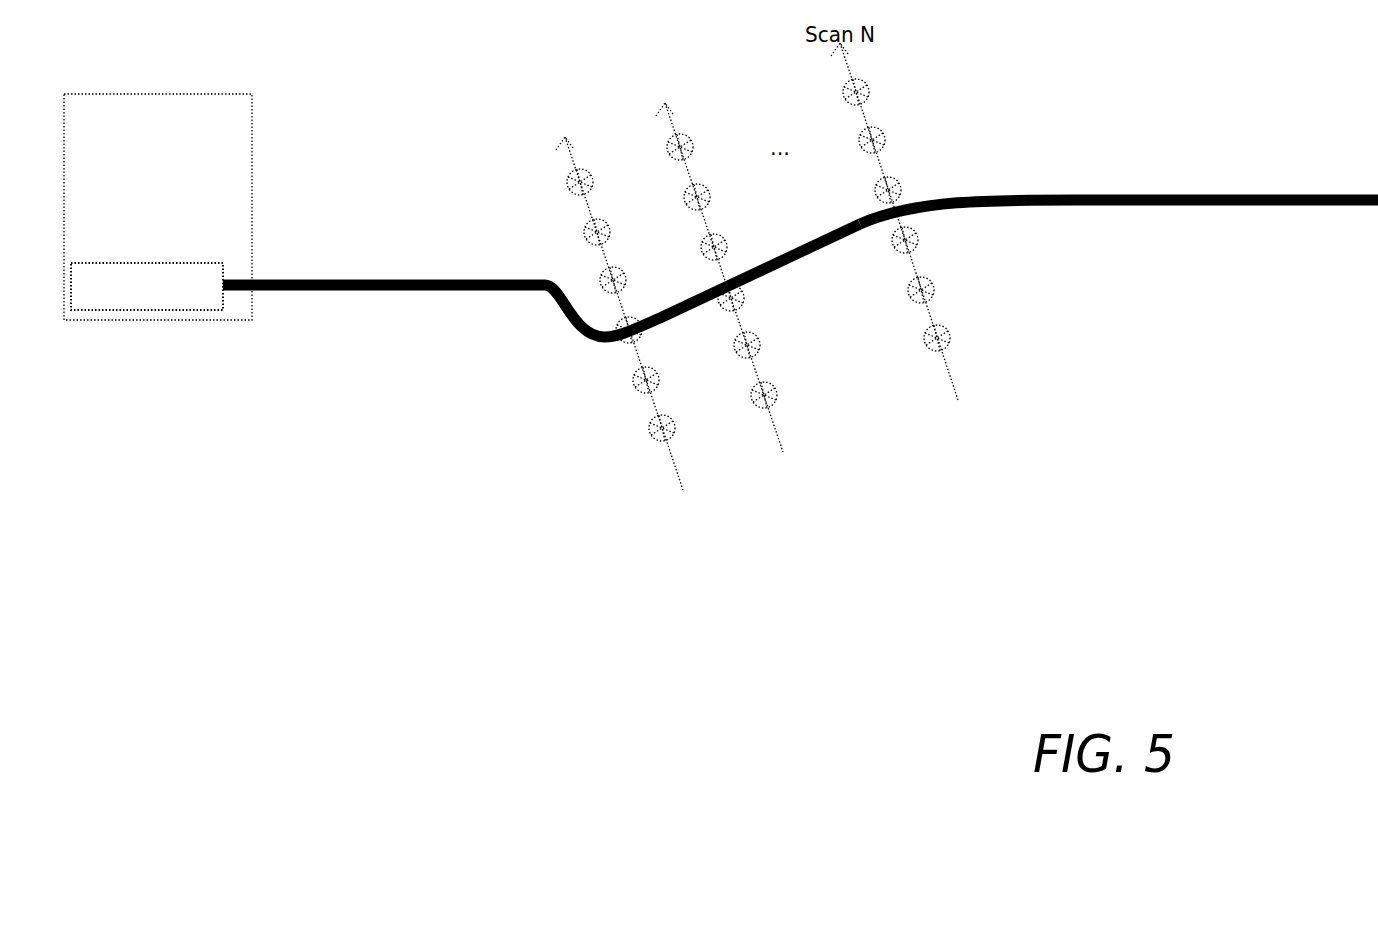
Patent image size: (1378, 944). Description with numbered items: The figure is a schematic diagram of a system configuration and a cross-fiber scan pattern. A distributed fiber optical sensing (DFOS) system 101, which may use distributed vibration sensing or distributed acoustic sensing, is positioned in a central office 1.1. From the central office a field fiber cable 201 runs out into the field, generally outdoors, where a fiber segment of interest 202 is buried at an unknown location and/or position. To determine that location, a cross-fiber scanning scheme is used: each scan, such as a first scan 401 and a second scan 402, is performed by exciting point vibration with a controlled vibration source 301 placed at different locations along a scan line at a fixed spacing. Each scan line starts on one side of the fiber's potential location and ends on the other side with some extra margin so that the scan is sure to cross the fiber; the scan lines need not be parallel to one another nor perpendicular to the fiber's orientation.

The central office 1.1 is at (158, 207).
The distributed fiber optical sensing system 101 is at (147, 286).
The field fiber cable 201 is at (391, 279).
The fiber segment of interest 202 is at (1015, 210).
The vibration source 301 is at (969, 282).
The first scan 401 is at (601, 283).
The second scan 402 is at (707, 250).